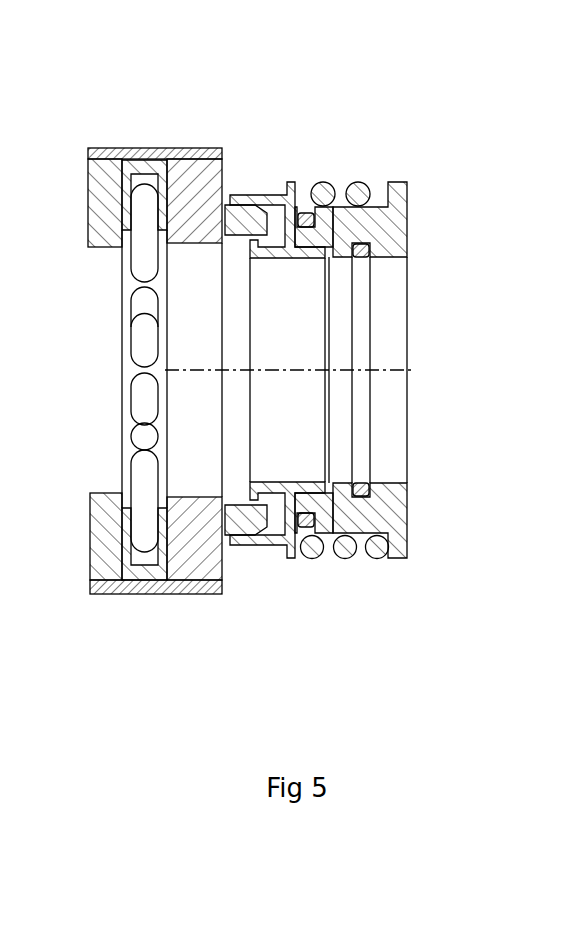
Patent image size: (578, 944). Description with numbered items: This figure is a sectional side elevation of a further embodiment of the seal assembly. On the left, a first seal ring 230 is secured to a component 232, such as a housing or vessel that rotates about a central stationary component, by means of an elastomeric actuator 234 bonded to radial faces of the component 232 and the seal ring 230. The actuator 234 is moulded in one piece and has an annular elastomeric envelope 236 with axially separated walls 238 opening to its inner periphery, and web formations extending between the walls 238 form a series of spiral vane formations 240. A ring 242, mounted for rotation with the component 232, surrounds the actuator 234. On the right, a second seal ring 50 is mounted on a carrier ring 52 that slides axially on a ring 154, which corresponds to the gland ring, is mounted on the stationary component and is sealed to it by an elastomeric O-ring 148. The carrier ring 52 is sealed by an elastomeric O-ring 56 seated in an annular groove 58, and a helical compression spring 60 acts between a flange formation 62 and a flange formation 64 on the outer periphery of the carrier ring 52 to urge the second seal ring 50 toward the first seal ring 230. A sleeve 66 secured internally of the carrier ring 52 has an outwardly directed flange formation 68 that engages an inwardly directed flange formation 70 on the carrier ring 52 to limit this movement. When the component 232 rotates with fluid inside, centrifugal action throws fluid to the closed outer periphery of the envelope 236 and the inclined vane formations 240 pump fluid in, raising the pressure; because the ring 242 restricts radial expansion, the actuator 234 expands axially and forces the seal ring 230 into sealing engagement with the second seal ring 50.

The second seal ring 50 is at (237, 205).
The carrier ring 52 is at (260, 195).
The elastomeric O-ring 56 is at (333, 185).
The annular groove 58 is at (308, 213).
The helical compression spring 60 is at (363, 183).
The flange formation 62 is at (408, 182).
The flange formation 64 is at (297, 207).
The sleeve 66 is at (353, 550).
The outwardly directed flange formation 68 is at (257, 503).
The inwardly directed flange formation 70 is at (297, 517).
The elastomeric O-ring 148 is at (372, 258).
The ring 154 is at (408, 207).
The first seal ring 230 is at (185, 168).
The component 232 is at (105, 555).
The elastomeric actuator 234 is at (127, 438).
The annular elastomeric envelope 236 is at (150, 566).
The axially separated walls 238 is at (140, 285).
The vane formations 240 is at (138, 388).
The ring 242 is at (98, 150).